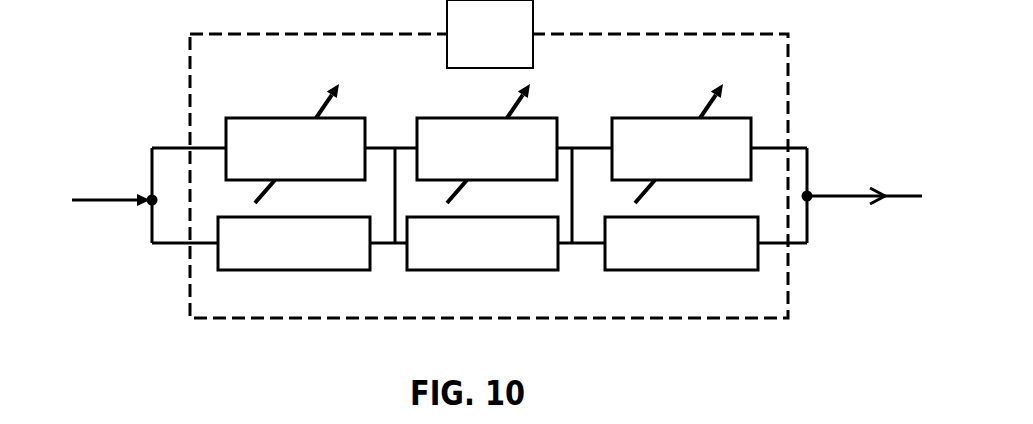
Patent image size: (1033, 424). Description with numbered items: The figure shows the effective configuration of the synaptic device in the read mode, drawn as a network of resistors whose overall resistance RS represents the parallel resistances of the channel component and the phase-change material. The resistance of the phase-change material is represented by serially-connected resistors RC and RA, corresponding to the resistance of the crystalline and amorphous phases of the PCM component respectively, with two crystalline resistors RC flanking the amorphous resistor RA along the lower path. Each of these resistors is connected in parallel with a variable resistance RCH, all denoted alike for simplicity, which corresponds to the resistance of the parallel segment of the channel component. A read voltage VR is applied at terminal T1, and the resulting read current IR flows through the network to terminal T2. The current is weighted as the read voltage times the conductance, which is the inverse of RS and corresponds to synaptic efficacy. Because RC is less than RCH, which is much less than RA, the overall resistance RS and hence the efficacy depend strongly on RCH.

The overall resistance RS is at (489, 159).
The variable resistance RCH is at (488, 143).
The crystalline-phase resistor RC is at (488, 243).
The amorphous-phase resistor RA is at (482, 243).
The terminal T1 is at (150, 194).
The terminal T2 is at (818, 193).
The read voltage VR is at (88, 195).
The read current IR is at (864, 220).